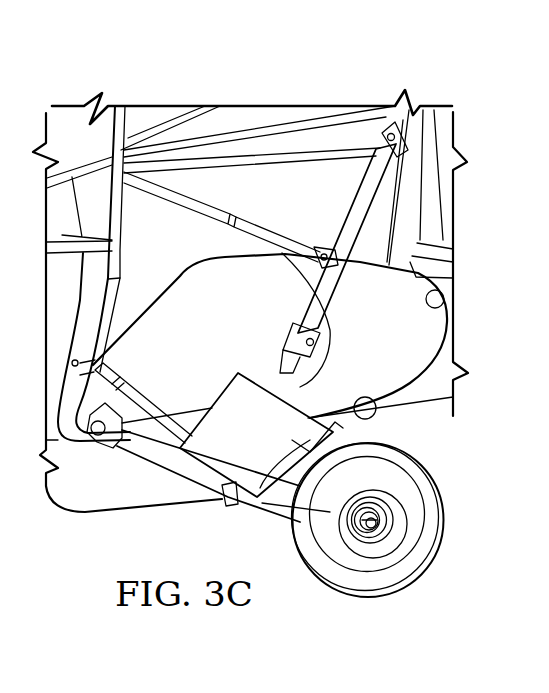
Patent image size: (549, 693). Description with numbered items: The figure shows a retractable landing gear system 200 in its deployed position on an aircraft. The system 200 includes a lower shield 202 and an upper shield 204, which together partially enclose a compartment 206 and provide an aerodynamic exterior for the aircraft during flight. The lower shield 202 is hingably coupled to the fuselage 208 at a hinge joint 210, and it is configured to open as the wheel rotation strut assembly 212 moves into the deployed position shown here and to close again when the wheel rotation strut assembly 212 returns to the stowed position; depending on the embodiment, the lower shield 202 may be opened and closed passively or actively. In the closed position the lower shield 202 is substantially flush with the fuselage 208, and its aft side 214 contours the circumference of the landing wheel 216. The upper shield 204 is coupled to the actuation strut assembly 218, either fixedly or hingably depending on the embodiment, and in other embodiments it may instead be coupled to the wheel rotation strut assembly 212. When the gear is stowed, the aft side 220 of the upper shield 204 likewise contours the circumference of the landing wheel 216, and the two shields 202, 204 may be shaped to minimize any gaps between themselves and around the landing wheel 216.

The retractable landing gear system 200 is at (356, 67).
The lower shield 202 is at (103, 513).
The upper shield 204 is at (253, 386).
The compartment 206 is at (446, 303).
The fuselage 208 is at (432, 400).
The hinge joint 210 is at (365, 398).
The wheel rotation strut assembly 212 is at (166, 466).
The aft side 214 is at (352, 422).
The landing wheel 216 is at (378, 597).
The actuation strut assembly 218 is at (350, 209).
The aft side 220 is at (266, 505).